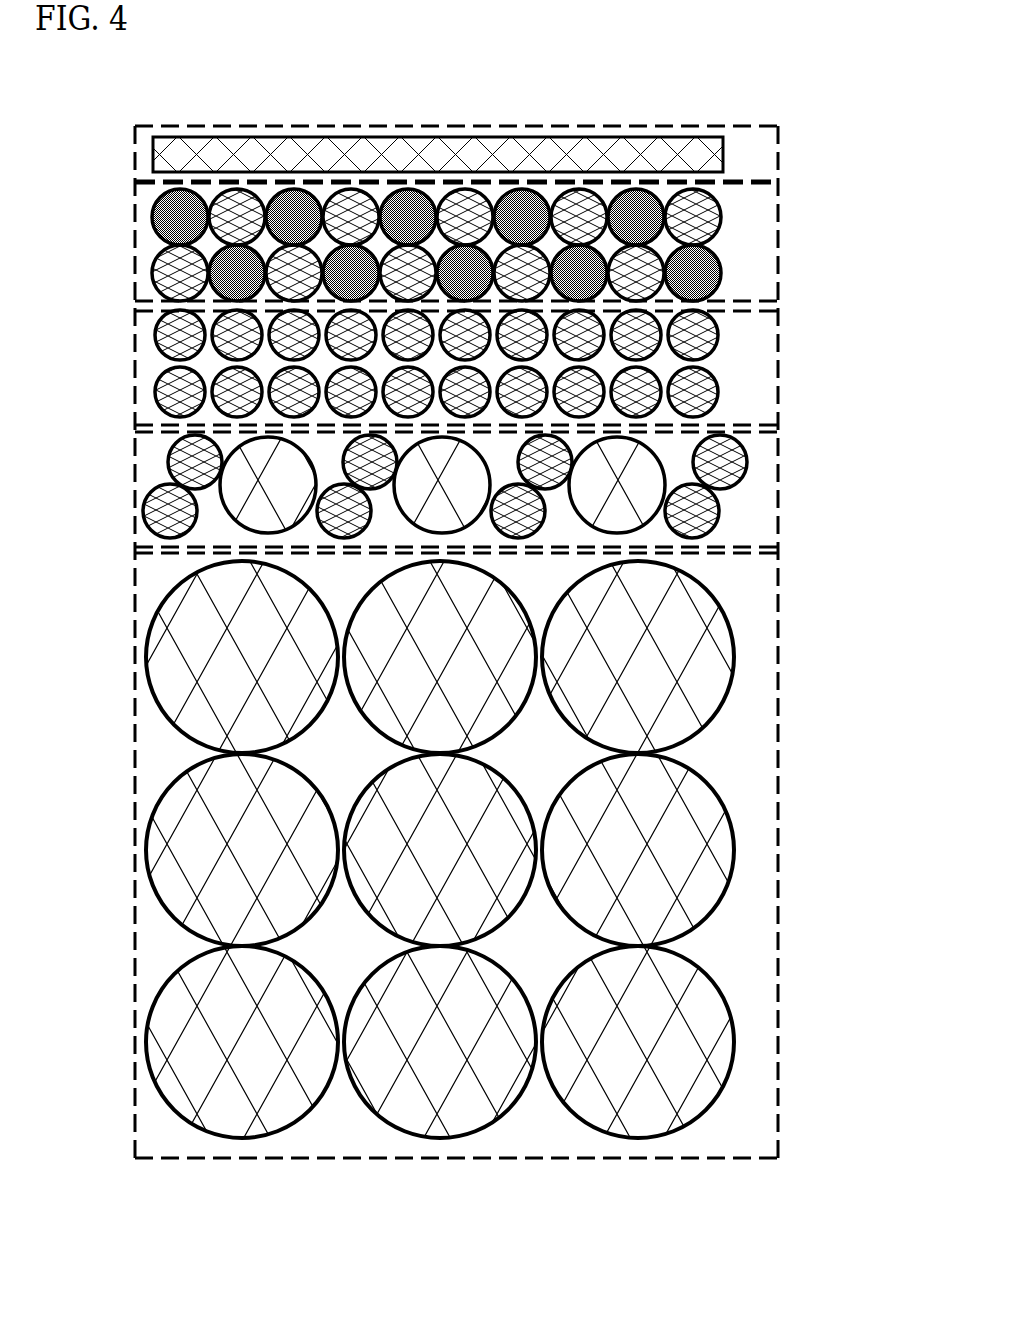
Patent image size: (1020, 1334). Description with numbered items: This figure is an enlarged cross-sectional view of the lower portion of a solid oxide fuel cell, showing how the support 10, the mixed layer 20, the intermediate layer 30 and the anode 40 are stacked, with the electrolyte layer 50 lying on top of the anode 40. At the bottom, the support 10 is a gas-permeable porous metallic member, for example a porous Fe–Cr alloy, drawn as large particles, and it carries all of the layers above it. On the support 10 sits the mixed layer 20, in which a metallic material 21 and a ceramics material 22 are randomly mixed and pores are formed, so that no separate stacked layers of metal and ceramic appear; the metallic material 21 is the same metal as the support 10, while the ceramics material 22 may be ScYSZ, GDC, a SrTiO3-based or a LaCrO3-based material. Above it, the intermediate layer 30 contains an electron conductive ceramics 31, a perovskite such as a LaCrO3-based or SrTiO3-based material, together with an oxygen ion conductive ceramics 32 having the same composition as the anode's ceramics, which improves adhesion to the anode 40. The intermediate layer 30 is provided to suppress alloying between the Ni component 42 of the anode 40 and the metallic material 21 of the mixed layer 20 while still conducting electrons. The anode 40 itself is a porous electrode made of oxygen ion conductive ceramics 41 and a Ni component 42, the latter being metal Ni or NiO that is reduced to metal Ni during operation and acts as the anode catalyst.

The support 10 is at (778, 677).
The mixed layer 20 is at (447, 489).
The metallic material 21 is at (232, 508).
The ceramics material 22 is at (745, 460).
The intermediate layer 30 is at (453, 367).
The electron conductive ceramics 31 is at (165, 397).
The oxygen ion conductive ceramics 32 is at (170, 336).
The anode 40 is at (486, 241).
The oxygen ion conductive ceramics 41 is at (178, 274).
The Ni component 42 is at (177, 213).
The electrolyte layer 50 is at (657, 150).